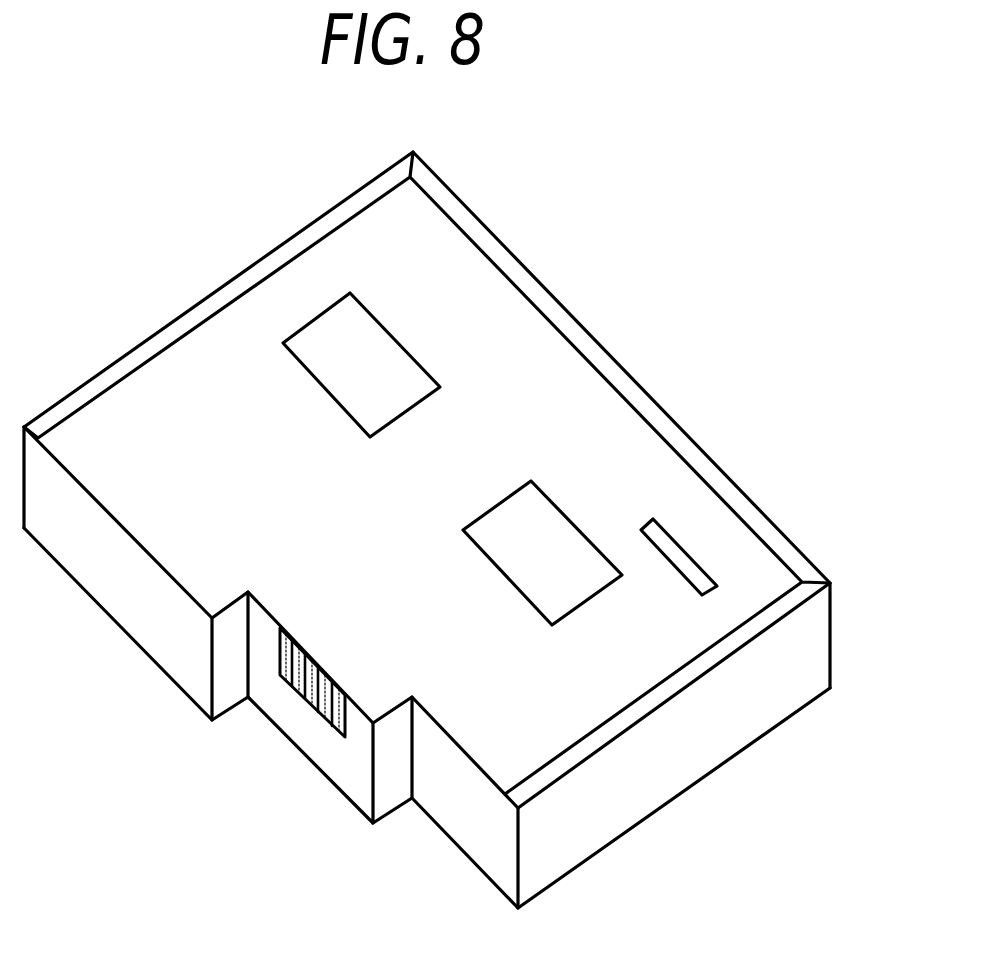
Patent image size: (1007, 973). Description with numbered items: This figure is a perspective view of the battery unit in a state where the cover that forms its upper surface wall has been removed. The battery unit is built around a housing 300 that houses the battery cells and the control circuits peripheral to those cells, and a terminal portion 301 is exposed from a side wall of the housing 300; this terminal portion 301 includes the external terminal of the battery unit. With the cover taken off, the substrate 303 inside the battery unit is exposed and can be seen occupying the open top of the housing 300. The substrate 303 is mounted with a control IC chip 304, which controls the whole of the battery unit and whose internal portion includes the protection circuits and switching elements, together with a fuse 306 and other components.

The housing 300 is at (762, 742).
The terminal portion 301 is at (322, 718).
The substrate 303 is at (472, 270).
The control IC chip 304 is at (410, 355).
The fuse 306 is at (697, 555).